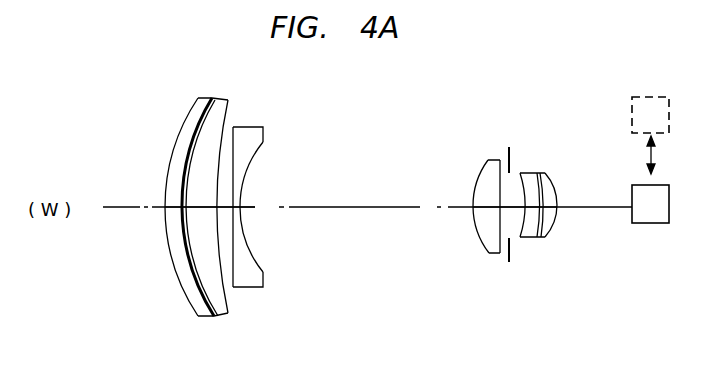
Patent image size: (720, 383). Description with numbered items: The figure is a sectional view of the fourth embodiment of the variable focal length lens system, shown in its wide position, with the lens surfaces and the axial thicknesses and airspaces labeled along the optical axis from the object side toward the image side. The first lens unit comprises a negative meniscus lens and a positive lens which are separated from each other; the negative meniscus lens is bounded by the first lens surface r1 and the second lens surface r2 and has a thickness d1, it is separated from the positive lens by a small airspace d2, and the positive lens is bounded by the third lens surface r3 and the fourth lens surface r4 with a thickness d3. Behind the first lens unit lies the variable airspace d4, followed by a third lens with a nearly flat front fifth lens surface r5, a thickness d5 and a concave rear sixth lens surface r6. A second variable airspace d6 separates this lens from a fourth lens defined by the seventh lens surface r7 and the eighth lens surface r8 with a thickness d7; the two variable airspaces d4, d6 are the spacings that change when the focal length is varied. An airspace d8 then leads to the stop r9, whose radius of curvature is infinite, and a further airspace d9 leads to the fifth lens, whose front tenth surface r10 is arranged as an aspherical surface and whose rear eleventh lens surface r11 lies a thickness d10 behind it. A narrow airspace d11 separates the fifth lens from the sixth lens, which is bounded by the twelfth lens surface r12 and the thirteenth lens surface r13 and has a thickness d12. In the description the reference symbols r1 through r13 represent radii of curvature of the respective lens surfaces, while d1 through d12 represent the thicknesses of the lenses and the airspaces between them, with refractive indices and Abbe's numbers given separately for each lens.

The first lens surface r1 is at (176, 292).
The second lens surface r2 is at (203, 316).
The third lens surface r3 is at (226, 292).
The fourth lens surface r4 is at (230, 288).
The fifth lens surface r5 is at (234, 268).
The sixth lens surface r6 is at (262, 262).
The seventh lens surface r7 is at (480, 236).
The eighth lens surface r8 is at (500, 250).
The stop r9 is at (509, 262).
The tenth surface r10 is at (520, 237).
The eleventh lens surface r11 is at (536, 238).
The twelfth lens surface r12 is at (541, 238).
The thirteenth lens surface r13 is at (558, 225).
The thickness of first lens d1 is at (164, 201).
The airspace between first and second lenses d2 is at (182, 213).
The thickness of second lens d3 is at (203, 205).
The variable airspace D1 d4 is at (243, 213).
The thickness of third lens d5 is at (241, 205).
The variable airspace D2 d6 is at (348, 205).
The thickness of fourth lens d7 is at (473, 202).
The airspace between fourth lens and stop d8 is at (500, 197).
The airspace between stop and fifth lens d9 is at (514, 205).
The thickness of fifth lens d10 is at (524, 205).
The airspace between fifth and sixth lenses d11 is at (542, 205).
The thickness of sixth lens d12 is at (557, 205).